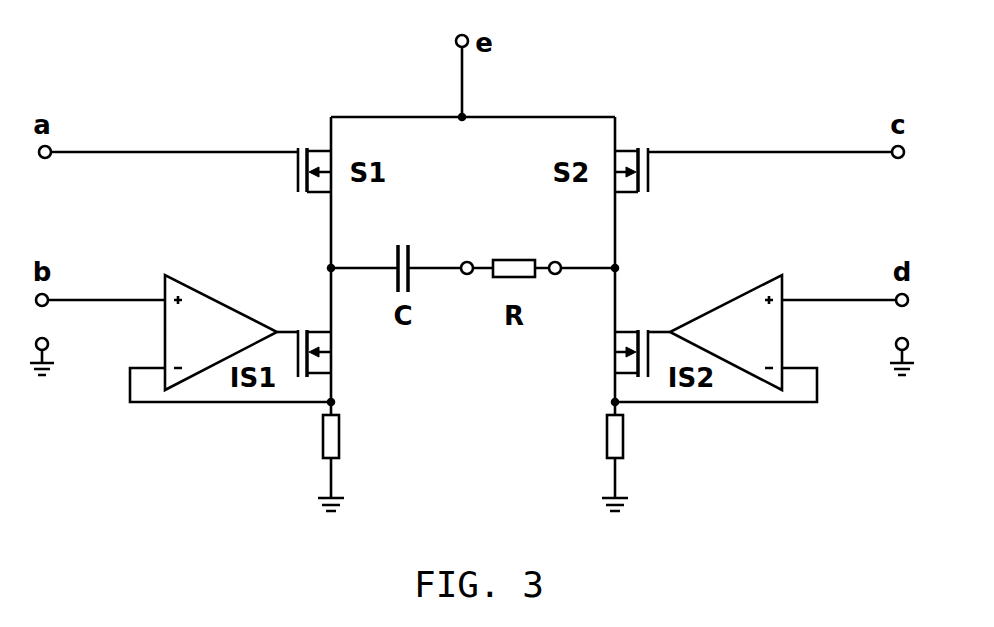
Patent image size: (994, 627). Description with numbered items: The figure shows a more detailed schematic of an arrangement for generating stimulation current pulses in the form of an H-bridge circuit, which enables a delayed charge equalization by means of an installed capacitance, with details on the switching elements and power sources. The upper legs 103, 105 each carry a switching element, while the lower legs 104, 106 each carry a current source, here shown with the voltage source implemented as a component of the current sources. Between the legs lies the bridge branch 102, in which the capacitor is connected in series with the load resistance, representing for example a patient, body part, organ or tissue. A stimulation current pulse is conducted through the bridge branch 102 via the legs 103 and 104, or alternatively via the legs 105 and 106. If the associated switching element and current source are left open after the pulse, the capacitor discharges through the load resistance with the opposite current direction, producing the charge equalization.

The bridge branch 102 is at (455, 272).
The leg 103 is at (331, 137).
The leg 104 is at (615, 320).
The leg 105 is at (615, 137).
The leg 106 is at (331, 320).